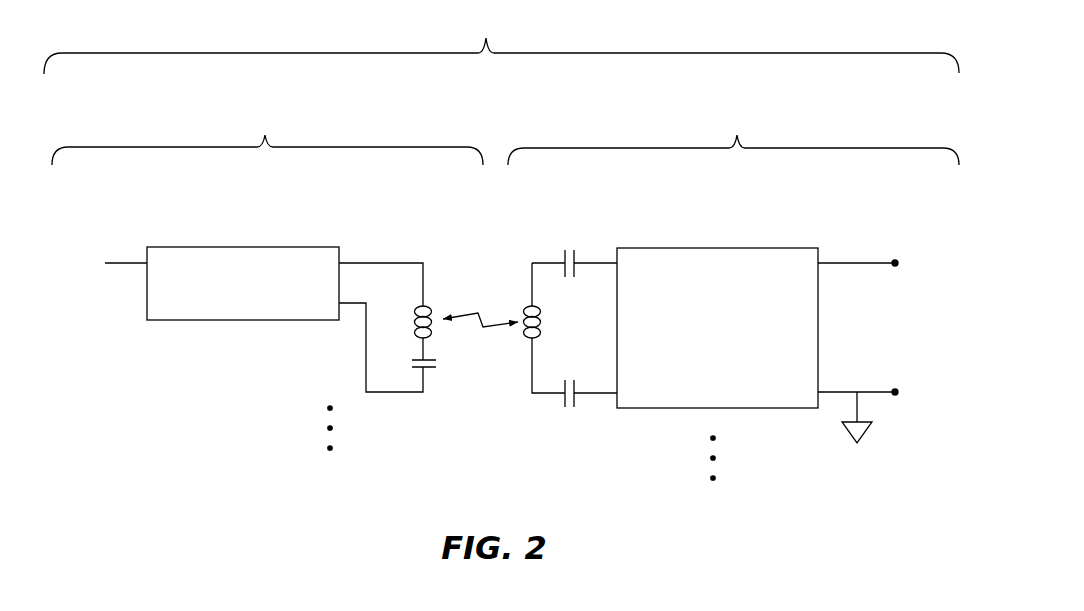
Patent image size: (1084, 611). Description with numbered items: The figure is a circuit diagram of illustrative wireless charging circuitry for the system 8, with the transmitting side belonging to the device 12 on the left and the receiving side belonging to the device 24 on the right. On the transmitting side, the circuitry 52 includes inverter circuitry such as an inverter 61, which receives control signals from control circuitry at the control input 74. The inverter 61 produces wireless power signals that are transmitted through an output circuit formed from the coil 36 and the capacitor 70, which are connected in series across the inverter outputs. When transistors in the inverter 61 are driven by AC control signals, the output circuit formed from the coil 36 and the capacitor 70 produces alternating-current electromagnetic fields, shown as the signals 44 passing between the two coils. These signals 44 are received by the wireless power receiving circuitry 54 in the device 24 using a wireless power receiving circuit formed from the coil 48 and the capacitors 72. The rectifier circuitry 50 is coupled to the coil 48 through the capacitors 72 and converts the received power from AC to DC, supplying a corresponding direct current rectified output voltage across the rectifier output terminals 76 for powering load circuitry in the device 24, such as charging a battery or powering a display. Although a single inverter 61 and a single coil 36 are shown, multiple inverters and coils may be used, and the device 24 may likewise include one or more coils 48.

The system 8 is at (501, 44).
The device 12 is at (267, 139).
The device 24 is at (733, 139).
The control input 74 is at (123, 262).
The inverter 61 is at (250, 247).
The coil 36 is at (439, 298).
The capacitor 70 is at (445, 373).
The circuitry 52 is at (285, 373).
The signals 44 is at (478, 313).
The coil 48 is at (518, 340).
The capacitor 72 is at (571, 238).
The rectifier circuitry 50 is at (720, 248).
The rectifier output terminals 76 is at (897, 268).
The wireless power receiving circuitry 54 is at (653, 450).